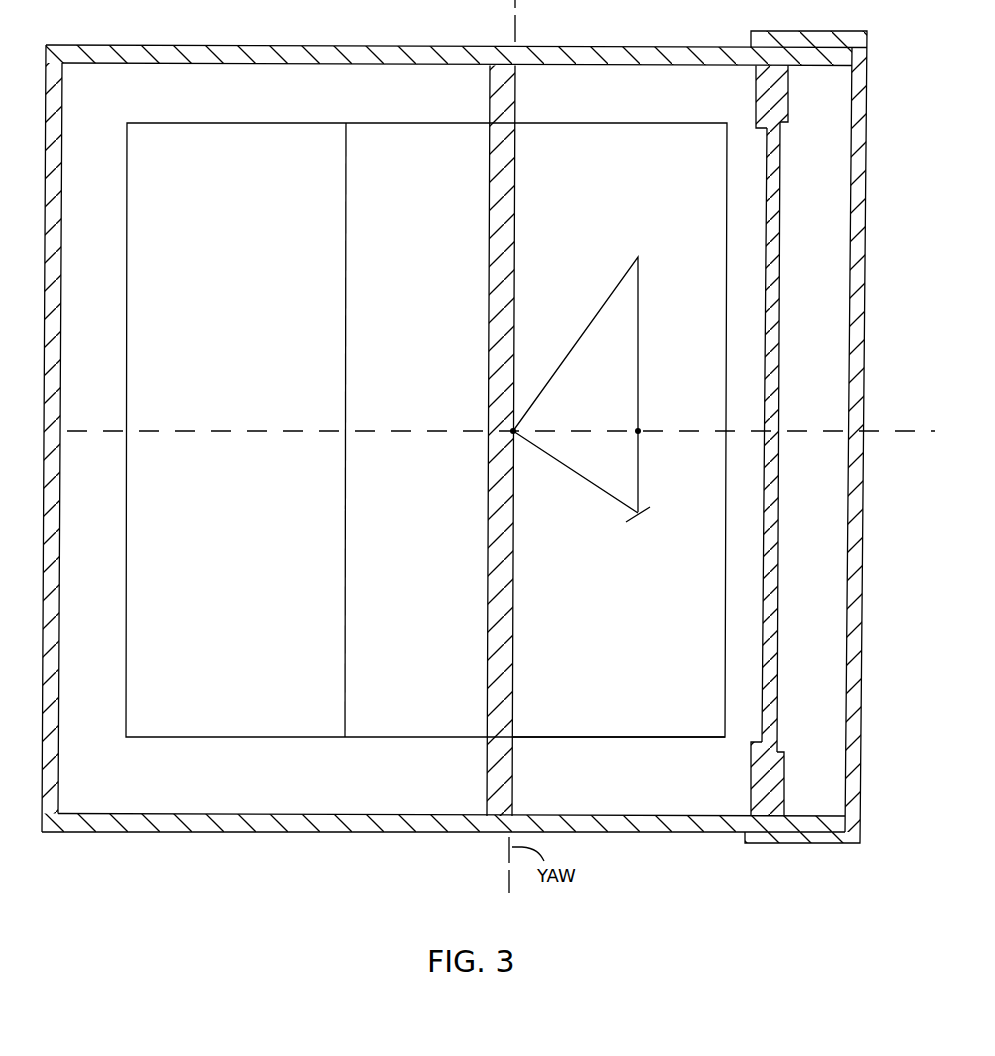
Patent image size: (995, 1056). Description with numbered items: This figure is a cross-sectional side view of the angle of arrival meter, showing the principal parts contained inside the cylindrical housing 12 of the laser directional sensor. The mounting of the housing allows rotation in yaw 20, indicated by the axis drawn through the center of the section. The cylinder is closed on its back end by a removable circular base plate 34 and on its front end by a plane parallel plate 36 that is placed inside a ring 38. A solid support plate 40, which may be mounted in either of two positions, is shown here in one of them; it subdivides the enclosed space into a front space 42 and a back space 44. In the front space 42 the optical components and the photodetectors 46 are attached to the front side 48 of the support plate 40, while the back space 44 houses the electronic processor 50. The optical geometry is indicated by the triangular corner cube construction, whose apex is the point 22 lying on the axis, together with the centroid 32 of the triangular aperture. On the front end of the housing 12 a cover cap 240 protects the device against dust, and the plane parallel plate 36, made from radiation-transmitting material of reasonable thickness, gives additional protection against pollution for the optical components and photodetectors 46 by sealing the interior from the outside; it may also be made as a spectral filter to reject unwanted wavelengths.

The housing 12 is at (378, 45).
The yaw 20 is at (510, 880).
The apex point 22 is at (513, 431).
The centroid 32 is at (638, 430).
The base plate 34 is at (60, 528).
The plane parallel plate 36 is at (778, 400).
The ring 38 is at (790, 95).
The support plate 40 is at (507, 249).
The front space 42 is at (630, 740).
The back space 44 is at (286, 738).
The photodetectors 46 is at (647, 515).
The front side 48 is at (513, 650).
The electronic processor 50 is at (266, 563).
The cover cap 240 is at (864, 544).